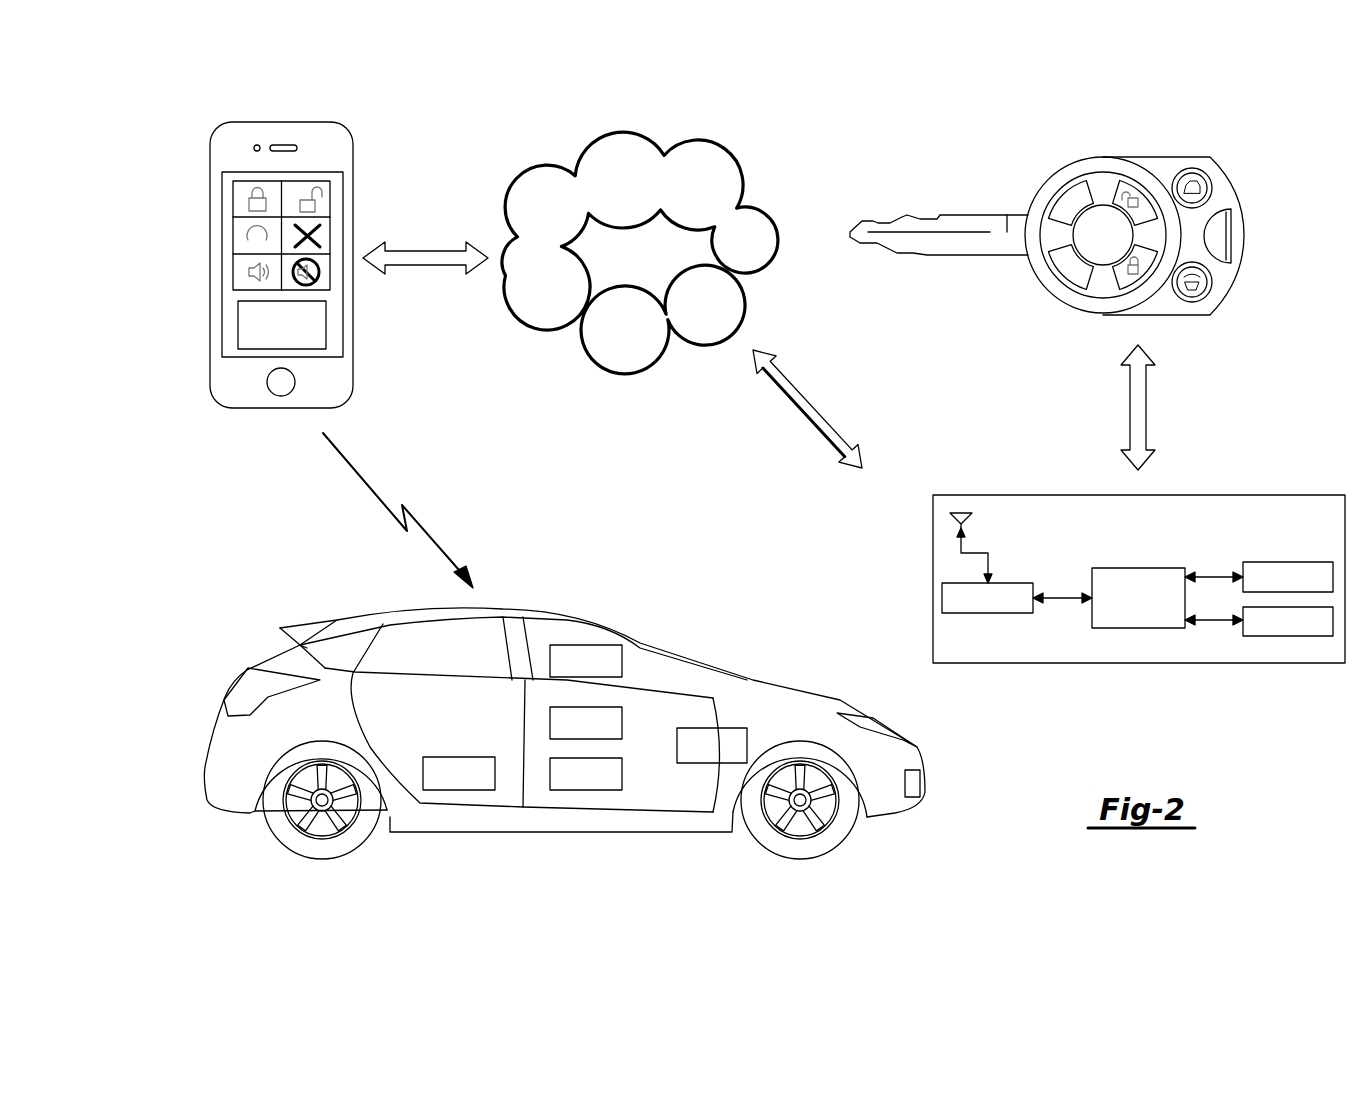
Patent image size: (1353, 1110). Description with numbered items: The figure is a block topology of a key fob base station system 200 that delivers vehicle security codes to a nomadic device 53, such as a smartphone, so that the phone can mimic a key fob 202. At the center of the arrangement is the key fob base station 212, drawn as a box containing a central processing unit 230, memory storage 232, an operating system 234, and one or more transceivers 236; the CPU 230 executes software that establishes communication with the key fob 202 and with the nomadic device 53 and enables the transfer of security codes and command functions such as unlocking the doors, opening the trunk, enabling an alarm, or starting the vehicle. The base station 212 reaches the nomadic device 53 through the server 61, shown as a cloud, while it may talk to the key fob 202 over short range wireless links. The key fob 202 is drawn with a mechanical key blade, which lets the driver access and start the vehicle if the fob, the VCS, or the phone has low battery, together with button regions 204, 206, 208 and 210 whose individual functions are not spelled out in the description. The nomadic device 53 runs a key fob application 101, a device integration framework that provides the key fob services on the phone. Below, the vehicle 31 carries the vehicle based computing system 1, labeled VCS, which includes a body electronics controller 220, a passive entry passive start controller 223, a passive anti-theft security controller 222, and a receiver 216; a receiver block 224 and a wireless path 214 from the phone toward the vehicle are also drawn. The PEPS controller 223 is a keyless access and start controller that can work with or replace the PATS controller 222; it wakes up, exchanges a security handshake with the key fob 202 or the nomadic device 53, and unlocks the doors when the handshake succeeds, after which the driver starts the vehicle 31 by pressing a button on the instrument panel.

The nomadic device 53 is at (259, 237).
The key fob application 101 is at (238, 327).
The server 61 is at (727, 147).
The key fob base station system 200 is at (1084, 207).
The key fob button segment 204 is at (1112, 190).
The key fob button segment 206 is at (1114, 278).
The key fob button 208 is at (1214, 186).
The key fob 202 is at (1244, 233).
The key fob button 210 is at (1214, 282).
The key fob base station 212 is at (1105, 567).
The memory storage 232 is at (1290, 562).
The operating system 234 is at (1290, 636).
The central processing unit 230 is at (1136, 628).
The transceiver 236 is at (942, 598).
The wireless communication link 214 is at (352, 470).
The receiver 216 is at (535, 608).
The receiver 224 is at (585, 645).
The vehicle 31 is at (564, 706).
The vehicle based computing system 1 is at (747, 738).
The passive anti-theft security controller 222 is at (622, 772).
The passive entry passive start controller 223 is at (550, 724).
The body electronics controller 220 is at (460, 757).